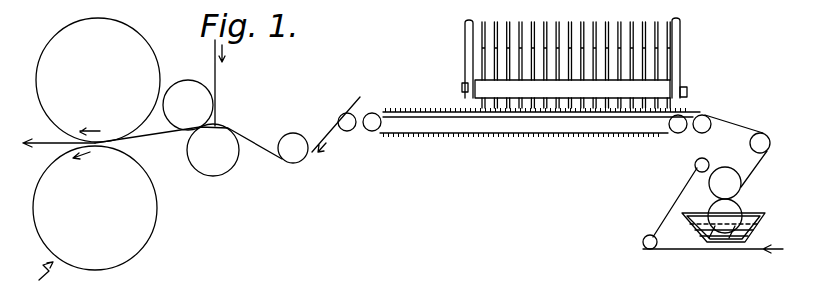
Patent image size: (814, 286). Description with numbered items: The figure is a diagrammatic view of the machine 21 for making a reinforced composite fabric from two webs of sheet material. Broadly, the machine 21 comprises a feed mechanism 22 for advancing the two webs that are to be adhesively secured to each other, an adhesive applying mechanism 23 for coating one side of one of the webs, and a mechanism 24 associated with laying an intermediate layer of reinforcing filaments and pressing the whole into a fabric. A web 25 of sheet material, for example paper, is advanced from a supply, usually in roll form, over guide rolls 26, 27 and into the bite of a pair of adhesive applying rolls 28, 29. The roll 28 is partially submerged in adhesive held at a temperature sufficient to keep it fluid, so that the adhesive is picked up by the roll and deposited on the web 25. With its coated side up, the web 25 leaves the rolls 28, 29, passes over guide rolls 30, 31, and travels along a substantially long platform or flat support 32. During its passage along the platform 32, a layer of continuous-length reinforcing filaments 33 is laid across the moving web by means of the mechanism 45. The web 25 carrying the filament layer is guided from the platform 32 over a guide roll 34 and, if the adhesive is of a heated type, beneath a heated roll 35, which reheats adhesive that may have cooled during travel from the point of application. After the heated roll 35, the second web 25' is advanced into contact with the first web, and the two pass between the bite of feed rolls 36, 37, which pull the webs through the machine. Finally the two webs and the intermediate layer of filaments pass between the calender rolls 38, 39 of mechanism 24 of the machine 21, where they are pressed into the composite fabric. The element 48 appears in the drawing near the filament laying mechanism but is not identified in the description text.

The machine 21 is at (552, 150).
The feed mechanism 22 is at (259, 191).
The adhesive applying mechanism 23 is at (682, 234).
The mechanism for laying an intermediate layer of reinforcing filaments 24 is at (700, 43).
The web 25 is at (713, 262).
The second web 25' is at (240, 83).
The guide roll 26 is at (645, 249).
The guide roll 27 is at (695, 163).
The adhesive applying roll 28 is at (740, 208).
The adhesive applying roll 29 is at (723, 171).
The guide roll 30 is at (763, 149).
The guide roll 31 is at (704, 122).
The platform 32 is at (434, 117).
The reinforcing filaments 33 is at (483, 103).
The guide roll 34 is at (357, 105).
The heated roll 35 is at (294, 135).
The feed roll 36 is at (203, 101).
The feed roll 37 is at (223, 176).
The calender roll 38 is at (144, 47).
The calender roll 39 is at (150, 221).
The mechanism 45 is at (457, 54).
The heater housing 48 is at (650, 88).